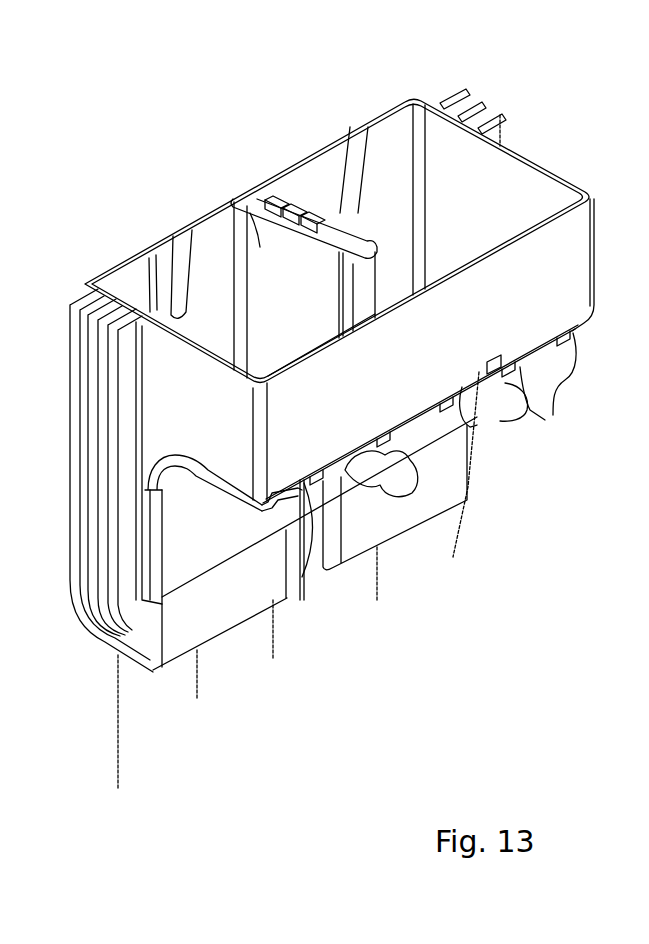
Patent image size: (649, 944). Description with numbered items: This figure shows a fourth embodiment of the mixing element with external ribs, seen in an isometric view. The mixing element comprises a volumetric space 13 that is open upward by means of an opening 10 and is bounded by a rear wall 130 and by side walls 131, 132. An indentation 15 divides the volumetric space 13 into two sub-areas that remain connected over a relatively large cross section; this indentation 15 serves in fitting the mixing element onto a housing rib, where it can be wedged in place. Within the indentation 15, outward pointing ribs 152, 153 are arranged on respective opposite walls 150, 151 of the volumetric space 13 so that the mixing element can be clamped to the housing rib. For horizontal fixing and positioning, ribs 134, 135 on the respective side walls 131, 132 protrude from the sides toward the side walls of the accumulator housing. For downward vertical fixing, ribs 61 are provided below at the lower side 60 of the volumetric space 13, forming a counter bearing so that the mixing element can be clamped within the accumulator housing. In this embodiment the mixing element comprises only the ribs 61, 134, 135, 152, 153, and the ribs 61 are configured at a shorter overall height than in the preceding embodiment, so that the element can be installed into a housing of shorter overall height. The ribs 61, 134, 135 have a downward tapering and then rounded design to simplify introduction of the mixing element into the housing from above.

The opening 10 is at (458, 160).
The volumetric space 13 is at (555, 257).
The indentation 15 is at (372, 320).
The lower side 60 is at (296, 585).
The ribs 61 is at (477, 417).
The rear wall 130 is at (497, 340).
The side wall 131 is at (473, 213).
The side wall 132 is at (215, 433).
The rib 134 is at (76, 498).
The rib 135 is at (462, 92).
The wall 150 is at (357, 228).
The wall 151 is at (310, 300).
The rib 152 is at (336, 216).
The rib 153 is at (287, 218).